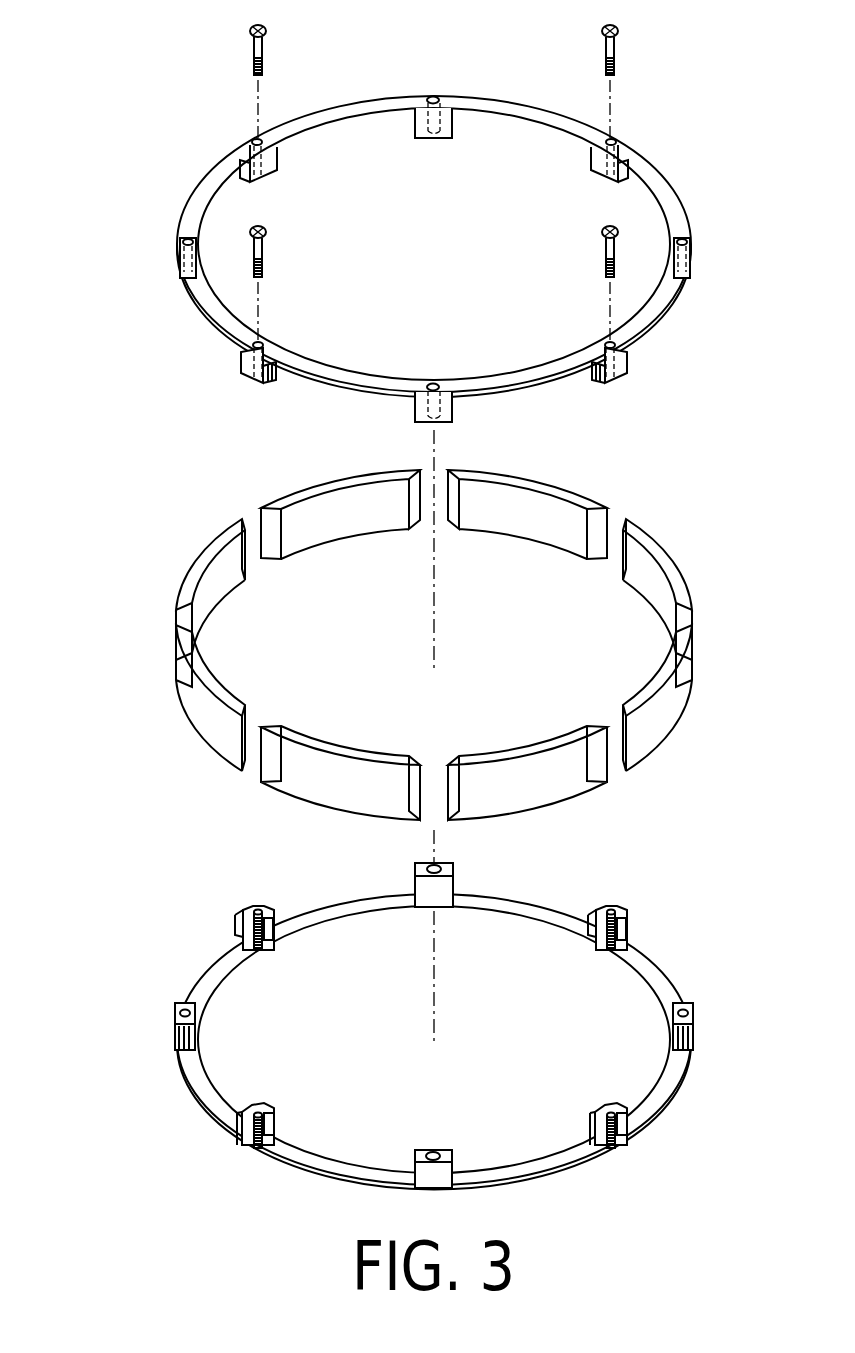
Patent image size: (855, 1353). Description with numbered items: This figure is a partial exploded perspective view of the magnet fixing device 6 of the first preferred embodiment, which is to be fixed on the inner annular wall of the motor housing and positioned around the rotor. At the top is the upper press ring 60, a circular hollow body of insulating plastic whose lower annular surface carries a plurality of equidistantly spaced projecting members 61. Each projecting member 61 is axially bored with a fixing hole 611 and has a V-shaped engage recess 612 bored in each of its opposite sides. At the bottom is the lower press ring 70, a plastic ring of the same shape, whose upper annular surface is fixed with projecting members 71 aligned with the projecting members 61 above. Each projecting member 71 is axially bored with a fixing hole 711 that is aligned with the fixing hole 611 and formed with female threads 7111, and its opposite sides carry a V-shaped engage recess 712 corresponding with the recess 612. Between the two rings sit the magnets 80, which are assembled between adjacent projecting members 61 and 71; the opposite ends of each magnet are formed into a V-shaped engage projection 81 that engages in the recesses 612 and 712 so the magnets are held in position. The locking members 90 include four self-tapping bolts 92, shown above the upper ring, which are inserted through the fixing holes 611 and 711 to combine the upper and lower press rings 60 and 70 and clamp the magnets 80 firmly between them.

The magnet fixing device 6 is at (407, 595).
The upper press ring 60 is at (409, 286).
The projecting member 61 is at (661, 404).
The fixing hole 611 is at (630, 352).
The V-shaped engage recess 612 is at (596, 387).
The lower press ring 70 is at (408, 1003).
The projecting member 71 is at (669, 891).
The fixing hole 711 is at (624, 907).
The V-shaped engage recess 712 is at (628, 935).
The female threads 7111 is at (247, 908).
The magnet 80 is at (391, 645).
The V-shaped engage projection 81 is at (630, 743).
The locking member 90 is at (384, 171).
The self-tapping bolt 92 is at (268, 33).